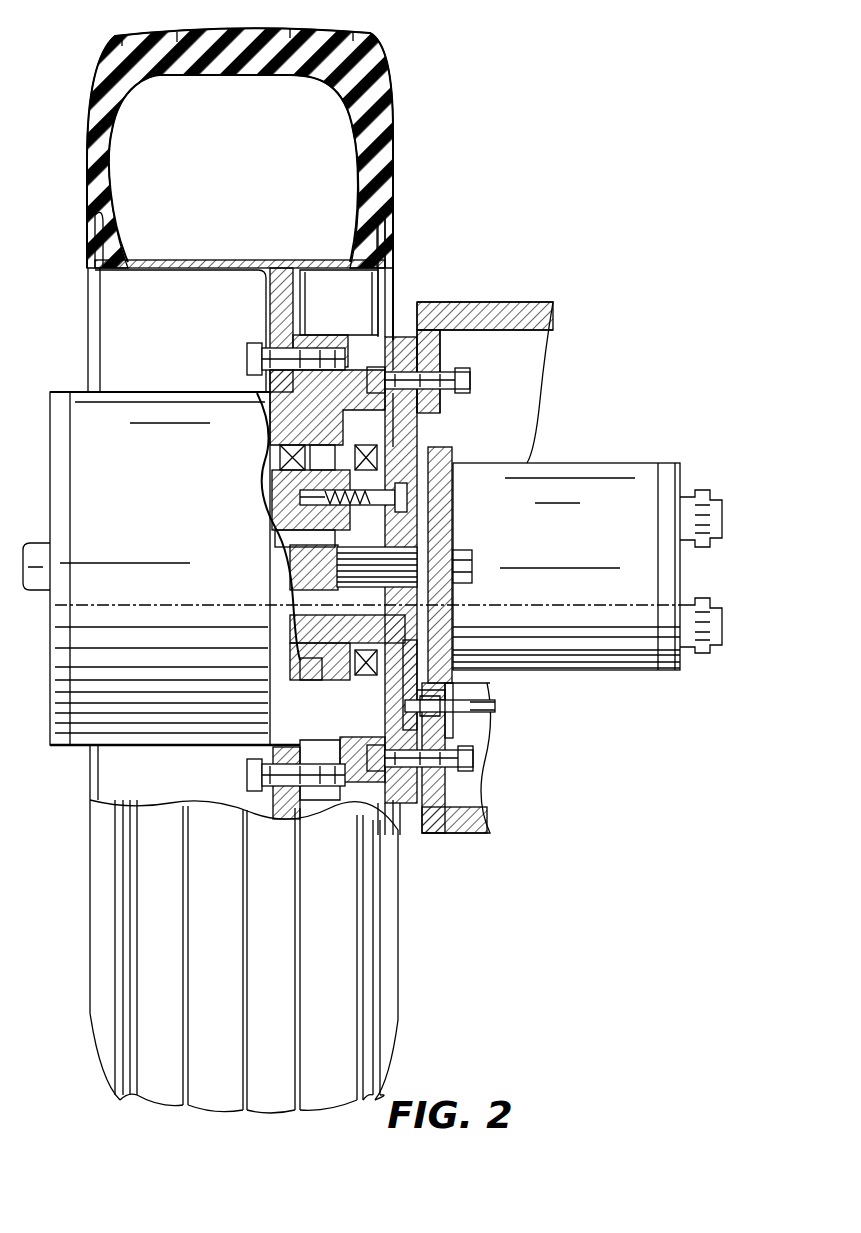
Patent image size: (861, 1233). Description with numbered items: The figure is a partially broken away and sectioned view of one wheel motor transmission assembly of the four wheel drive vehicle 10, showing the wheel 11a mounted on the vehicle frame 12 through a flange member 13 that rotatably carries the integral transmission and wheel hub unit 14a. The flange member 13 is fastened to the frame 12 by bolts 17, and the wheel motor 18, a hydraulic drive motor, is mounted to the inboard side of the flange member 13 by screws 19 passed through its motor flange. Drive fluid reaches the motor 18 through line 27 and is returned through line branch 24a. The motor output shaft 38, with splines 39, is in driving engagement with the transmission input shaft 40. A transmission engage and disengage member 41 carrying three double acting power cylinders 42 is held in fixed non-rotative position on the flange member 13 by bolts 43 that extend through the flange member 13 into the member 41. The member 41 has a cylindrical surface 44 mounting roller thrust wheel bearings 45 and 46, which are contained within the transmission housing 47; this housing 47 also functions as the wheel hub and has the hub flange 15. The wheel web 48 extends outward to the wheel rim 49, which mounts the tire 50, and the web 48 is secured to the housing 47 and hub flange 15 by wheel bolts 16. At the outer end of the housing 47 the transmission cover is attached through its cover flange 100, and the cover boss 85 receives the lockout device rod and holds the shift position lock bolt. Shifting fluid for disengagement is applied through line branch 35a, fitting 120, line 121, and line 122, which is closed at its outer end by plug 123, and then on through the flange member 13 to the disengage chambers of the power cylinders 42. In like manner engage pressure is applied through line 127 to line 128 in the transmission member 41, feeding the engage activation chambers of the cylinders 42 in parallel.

The four wheel drive vehicle 10 is at (530, 130).
The wheel 11a is at (398, 123).
The vehicle frame 12 is at (548, 300).
The flange member 13 is at (407, 300).
The integral transmission and wheel hub unit 14a is at (75, 748).
The hub flange 15 is at (327, 333).
The wheel bolts 16 is at (247, 358).
The bolts 17 is at (472, 380).
The wheel motor 18 is at (603, 463).
The screws 19 is at (472, 568).
The line branch 24a is at (717, 497).
The line 27 is at (717, 653).
The line branch 35a is at (495, 707).
The output shaft 38 is at (418, 568).
The splines 39 is at (300, 572).
The transmission input shaft 40 is at (287, 553).
The transmission engage and disengage member 41 is at (277, 493).
The double acting power cylinders 42 is at (293, 636).
The bolts 43 is at (407, 500).
The cylindrical surface 44 is at (308, 430).
The roller thrust wheel bearing 45 is at (270, 427).
The roller thrust wheel bearing 46 is at (338, 448).
The transmission housing 47 is at (158, 397).
The wheel web 48 is at (270, 300).
The wheel rim 49 is at (160, 270).
The tire 50 is at (380, 80).
The cover boss 85 is at (33, 543).
The cover flange 100 is at (57, 390).
The fitting 120 is at (490, 733).
The line 121 is at (493, 700).
The line 122 is at (405, 672).
The plug 123 is at (402, 800).
The line 127 is at (490, 607).
The line 128 is at (177, 607).